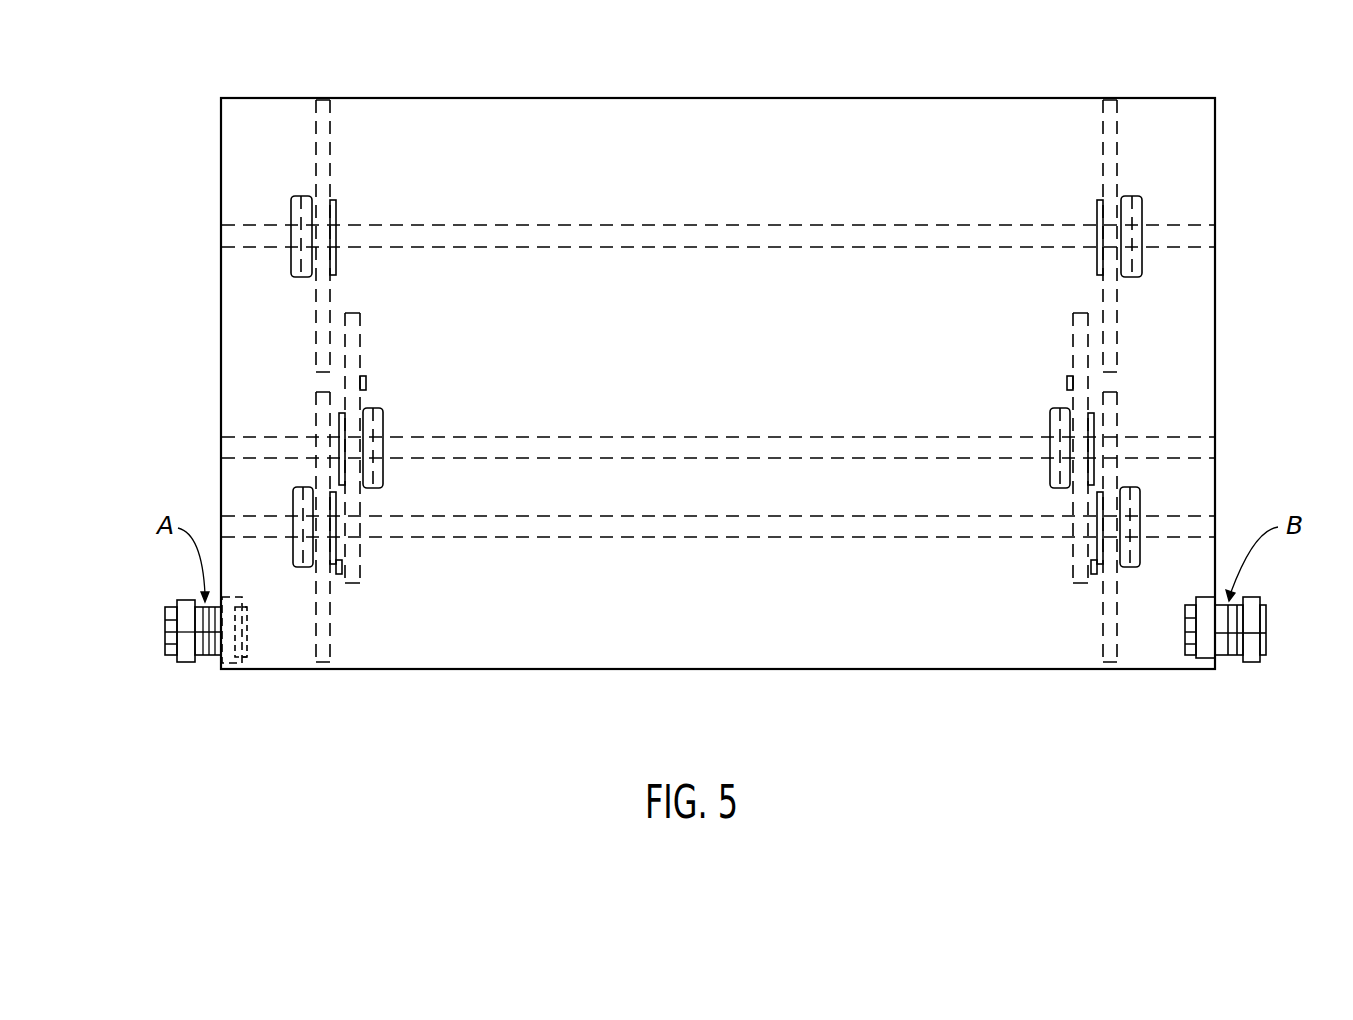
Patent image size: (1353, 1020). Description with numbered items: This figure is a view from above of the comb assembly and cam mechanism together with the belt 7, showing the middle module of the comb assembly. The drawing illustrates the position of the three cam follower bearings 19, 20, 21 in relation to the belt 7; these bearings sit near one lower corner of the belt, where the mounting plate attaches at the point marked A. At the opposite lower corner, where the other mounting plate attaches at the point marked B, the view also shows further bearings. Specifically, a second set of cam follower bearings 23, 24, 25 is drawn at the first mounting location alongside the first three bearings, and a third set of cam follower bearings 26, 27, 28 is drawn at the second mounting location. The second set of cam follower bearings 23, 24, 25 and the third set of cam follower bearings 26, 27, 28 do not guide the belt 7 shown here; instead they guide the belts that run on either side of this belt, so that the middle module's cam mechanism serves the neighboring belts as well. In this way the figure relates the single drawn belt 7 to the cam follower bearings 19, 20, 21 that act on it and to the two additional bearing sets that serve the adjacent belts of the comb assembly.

The belt 7 is at (1197, 321).
The cam follower bearing 19 is at (242, 604).
The cam follower bearing 20 is at (247, 616).
The cam follower bearing 21 is at (234, 640).
The cam follower bearing 23 is at (176, 601).
The cam follower bearing 24 is at (165, 626).
The cam follower bearing 25 is at (178, 661).
The cam follower bearing 26 is at (1262, 598).
The cam follower bearing 27 is at (1256, 618).
The cam follower bearing 28 is at (1258, 656).